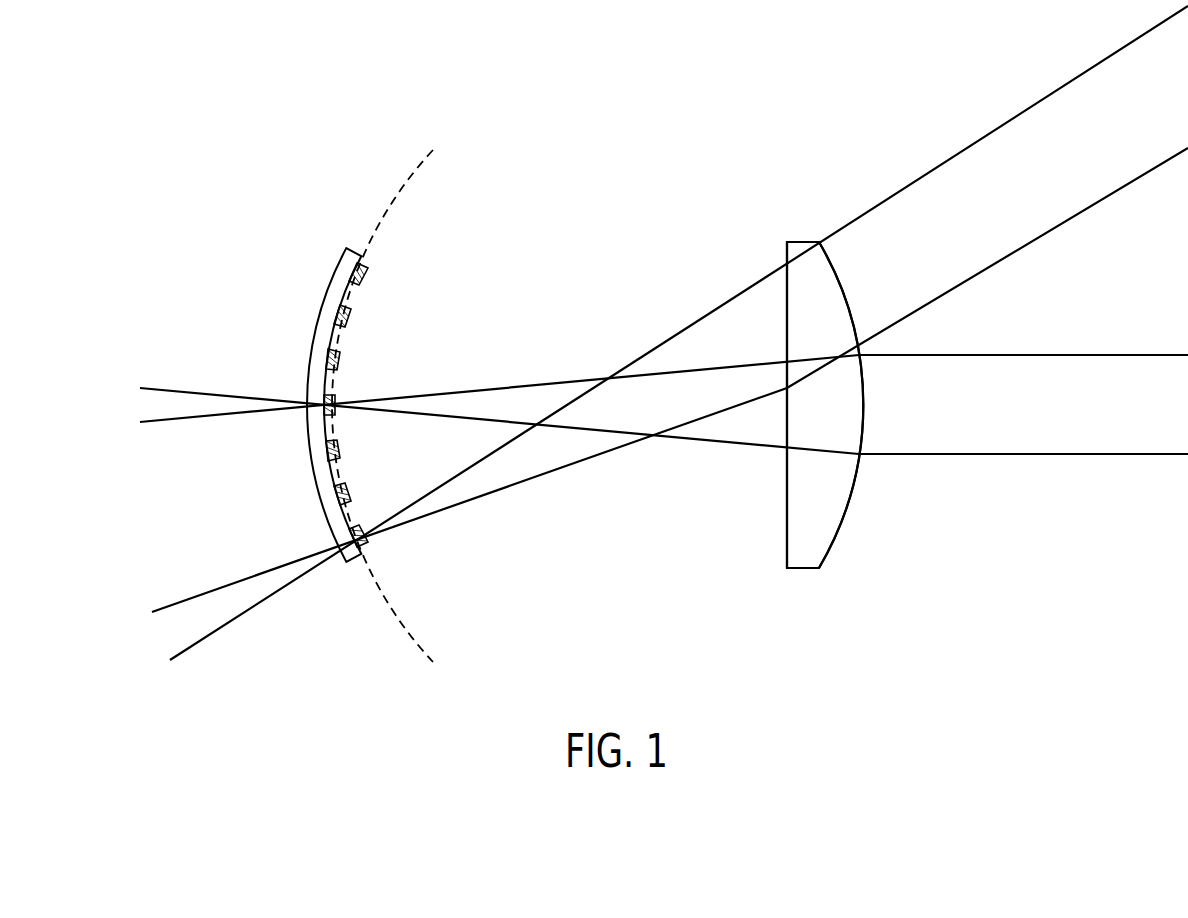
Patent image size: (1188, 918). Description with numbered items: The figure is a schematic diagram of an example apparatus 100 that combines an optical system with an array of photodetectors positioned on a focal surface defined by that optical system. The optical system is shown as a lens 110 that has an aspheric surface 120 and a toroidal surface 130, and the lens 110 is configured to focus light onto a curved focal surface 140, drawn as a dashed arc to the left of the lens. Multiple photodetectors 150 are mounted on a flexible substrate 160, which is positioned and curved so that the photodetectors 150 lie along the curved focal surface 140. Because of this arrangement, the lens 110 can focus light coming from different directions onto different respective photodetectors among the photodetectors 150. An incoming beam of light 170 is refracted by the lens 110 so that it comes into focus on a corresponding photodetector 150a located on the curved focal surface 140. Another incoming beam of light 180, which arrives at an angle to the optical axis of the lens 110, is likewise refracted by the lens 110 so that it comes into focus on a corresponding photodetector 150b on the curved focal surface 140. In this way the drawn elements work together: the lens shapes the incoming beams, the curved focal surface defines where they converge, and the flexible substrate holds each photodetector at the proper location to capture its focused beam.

The apparatus 100 is at (176, 153).
The lens 110 is at (802, 568).
The aspheric surface 120 is at (862, 503).
The toroidal surface 130 is at (772, 510).
The curved focal surface 140 is at (424, 179).
The photodetectors 150 is at (366, 316).
The photodetector 150a is at (323, 420).
The photodetector 150b is at (365, 547).
The flexible substrate 160 is at (313, 340).
The incoming beam of light 170 is at (875, 210).
The incoming beam of light 180 is at (1017, 455).